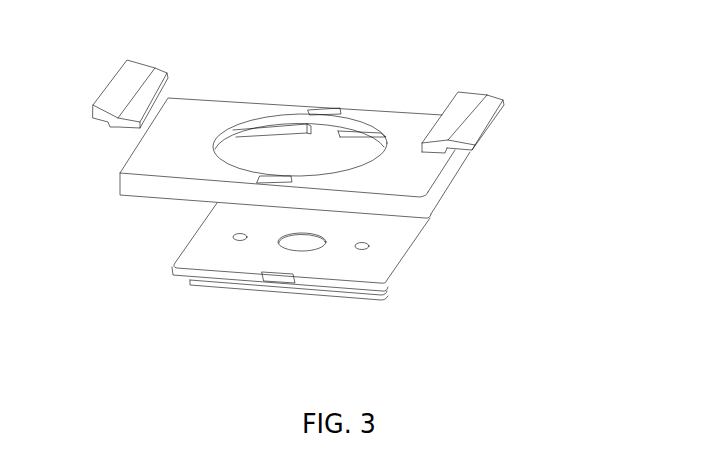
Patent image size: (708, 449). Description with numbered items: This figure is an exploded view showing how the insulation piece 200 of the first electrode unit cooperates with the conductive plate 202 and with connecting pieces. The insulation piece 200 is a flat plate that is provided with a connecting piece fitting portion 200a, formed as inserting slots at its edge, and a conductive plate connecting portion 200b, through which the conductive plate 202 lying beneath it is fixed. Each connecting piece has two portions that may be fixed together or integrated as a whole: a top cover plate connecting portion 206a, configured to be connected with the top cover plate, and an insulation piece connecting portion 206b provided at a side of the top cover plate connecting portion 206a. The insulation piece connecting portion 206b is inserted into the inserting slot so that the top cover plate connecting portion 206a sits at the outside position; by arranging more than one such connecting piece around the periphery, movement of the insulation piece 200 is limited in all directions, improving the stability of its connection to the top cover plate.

The insulation piece 200 is at (235, 141).
The connecting piece fitting portion 200a is at (455, 172).
The conductive plate connecting portion 200b is at (305, 127).
The conductive plate 202 is at (398, 250).
The top cover plate connecting portion 206a is at (492, 95).
The insulation piece connecting portion 206b is at (450, 117).